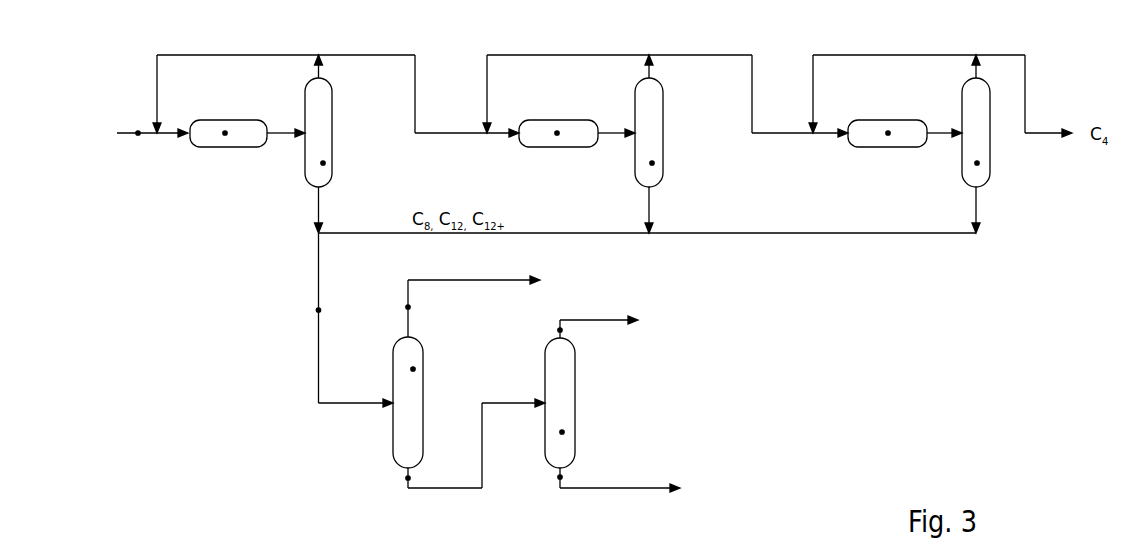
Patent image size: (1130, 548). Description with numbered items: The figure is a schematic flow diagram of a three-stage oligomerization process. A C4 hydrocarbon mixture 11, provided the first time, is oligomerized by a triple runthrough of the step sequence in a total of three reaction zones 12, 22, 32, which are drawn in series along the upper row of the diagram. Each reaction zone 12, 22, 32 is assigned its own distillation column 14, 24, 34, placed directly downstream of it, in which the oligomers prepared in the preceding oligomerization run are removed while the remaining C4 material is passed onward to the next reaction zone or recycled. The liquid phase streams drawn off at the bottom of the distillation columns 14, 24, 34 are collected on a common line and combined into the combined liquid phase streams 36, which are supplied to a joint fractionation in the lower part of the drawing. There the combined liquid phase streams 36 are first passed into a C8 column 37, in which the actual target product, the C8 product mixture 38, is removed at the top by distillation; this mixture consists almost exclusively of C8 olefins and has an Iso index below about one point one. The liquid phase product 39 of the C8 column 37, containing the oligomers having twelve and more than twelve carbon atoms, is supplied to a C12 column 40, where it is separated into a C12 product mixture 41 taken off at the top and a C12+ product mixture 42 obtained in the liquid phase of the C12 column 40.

The C4 hydrocarbon mixture 11 is at (138, 133).
The reaction zone 12 is at (225, 133).
The distillation column 14 is at (323, 163).
The reaction zone 22 is at (552, 133).
The distillation column 24 is at (652, 163).
The reaction zone 32 is at (880, 133).
The distillation column 34 is at (977, 163).
The combined liquid phase streams 36 is at (318, 310).
The C8 column 37 is at (413, 369).
The C8 product mixture 38 is at (408, 307).
The liquid phase product 39 is at (408, 478).
The C12 column 40 is at (562, 432).
The C12 product mixture 41 is at (560, 330).
The C12+ product mixture 42 is at (560, 477).